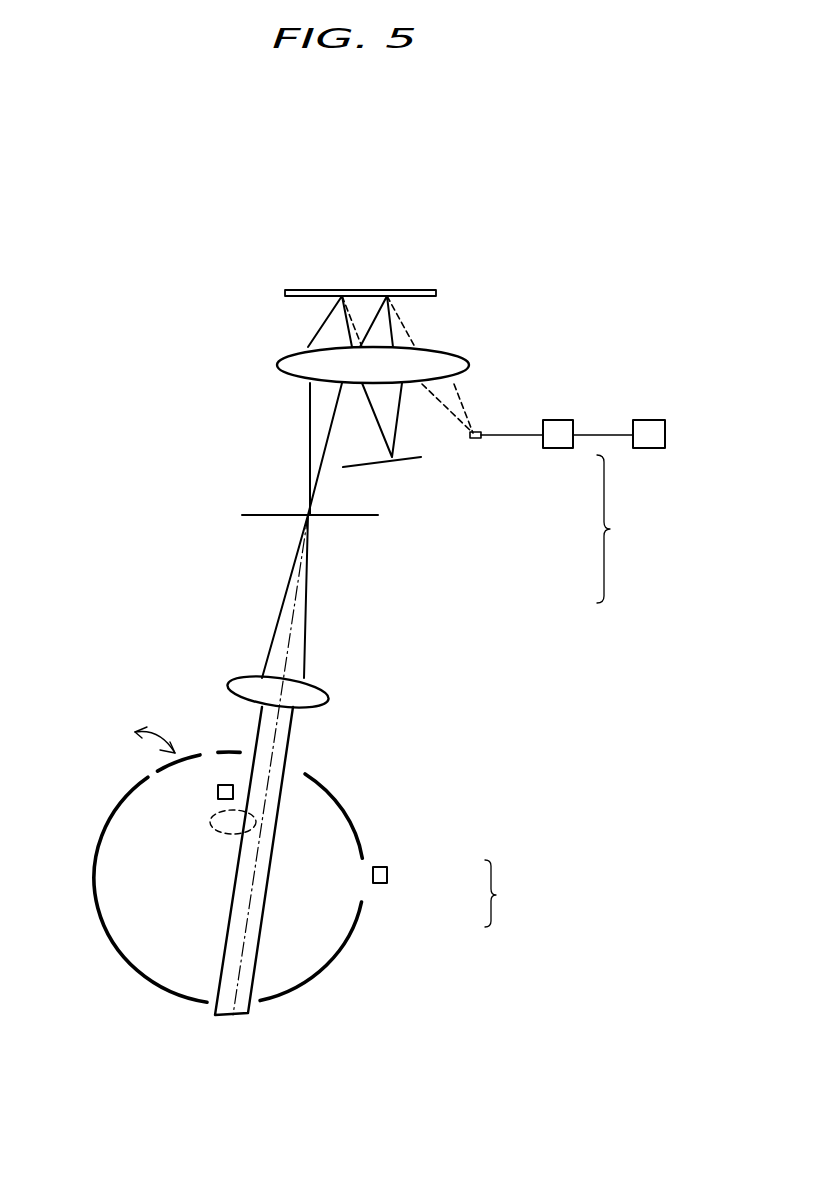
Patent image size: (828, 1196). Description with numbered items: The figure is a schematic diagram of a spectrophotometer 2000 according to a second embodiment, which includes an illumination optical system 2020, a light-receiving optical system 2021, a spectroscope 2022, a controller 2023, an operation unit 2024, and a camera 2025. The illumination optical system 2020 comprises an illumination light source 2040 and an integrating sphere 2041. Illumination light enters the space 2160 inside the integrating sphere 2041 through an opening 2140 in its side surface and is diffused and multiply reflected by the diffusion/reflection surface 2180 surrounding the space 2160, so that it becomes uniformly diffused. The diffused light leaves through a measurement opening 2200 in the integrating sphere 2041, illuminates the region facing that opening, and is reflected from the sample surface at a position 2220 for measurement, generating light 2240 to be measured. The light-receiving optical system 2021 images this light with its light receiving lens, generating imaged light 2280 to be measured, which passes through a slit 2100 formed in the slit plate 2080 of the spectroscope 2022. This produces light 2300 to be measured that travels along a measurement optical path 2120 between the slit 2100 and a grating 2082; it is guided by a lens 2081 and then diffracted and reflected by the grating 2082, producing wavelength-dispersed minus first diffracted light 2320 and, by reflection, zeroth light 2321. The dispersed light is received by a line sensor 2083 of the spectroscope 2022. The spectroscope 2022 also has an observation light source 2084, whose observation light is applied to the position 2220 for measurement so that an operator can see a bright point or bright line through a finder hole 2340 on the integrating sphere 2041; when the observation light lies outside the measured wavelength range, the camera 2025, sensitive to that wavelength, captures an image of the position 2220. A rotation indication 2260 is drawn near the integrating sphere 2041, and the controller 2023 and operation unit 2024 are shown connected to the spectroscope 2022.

The spectrophotometer 2000 is at (528, 175).
The minus first diffracted light 2320 is at (353, 329).
The zeroth light 2321 is at (355, 326).
The light to be measured 2300 is at (310, 387).
The measurement optical path 2120 is at (310, 405).
The grating 2082 is at (436, 293).
The lens 2081 is at (469, 366).
The line sensor 2083 is at (410, 462).
The observation light source 2084 is at (479, 438).
The slit plate 2080 is at (348, 517).
The spectroscope 2022 is at (631, 529).
The controller 2023 is at (558, 420).
The operation unit 2024 is at (650, 420).
The slit 2100 is at (302, 522).
The imaged light to be measured 2280 is at (308, 535).
The light-receiving optical system 2021 is at (330, 698).
The light to be measured 2240 is at (290, 743).
The camera 2025 is at (223, 783).
The rotation direction 2260 is at (172, 763).
The diffusion/reflection surface 2180 is at (108, 820).
The finder hole 2340 is at (213, 835).
The opening 2140 is at (367, 860).
The illumination light source 2040 is at (387, 875).
The integrating sphere 2041 is at (352, 935).
The illumination optical system 2020 is at (517, 893).
The space 2160 is at (122, 930).
The measurement opening 2200 is at (208, 1003).
The position for measurement 2220 is at (260, 987).